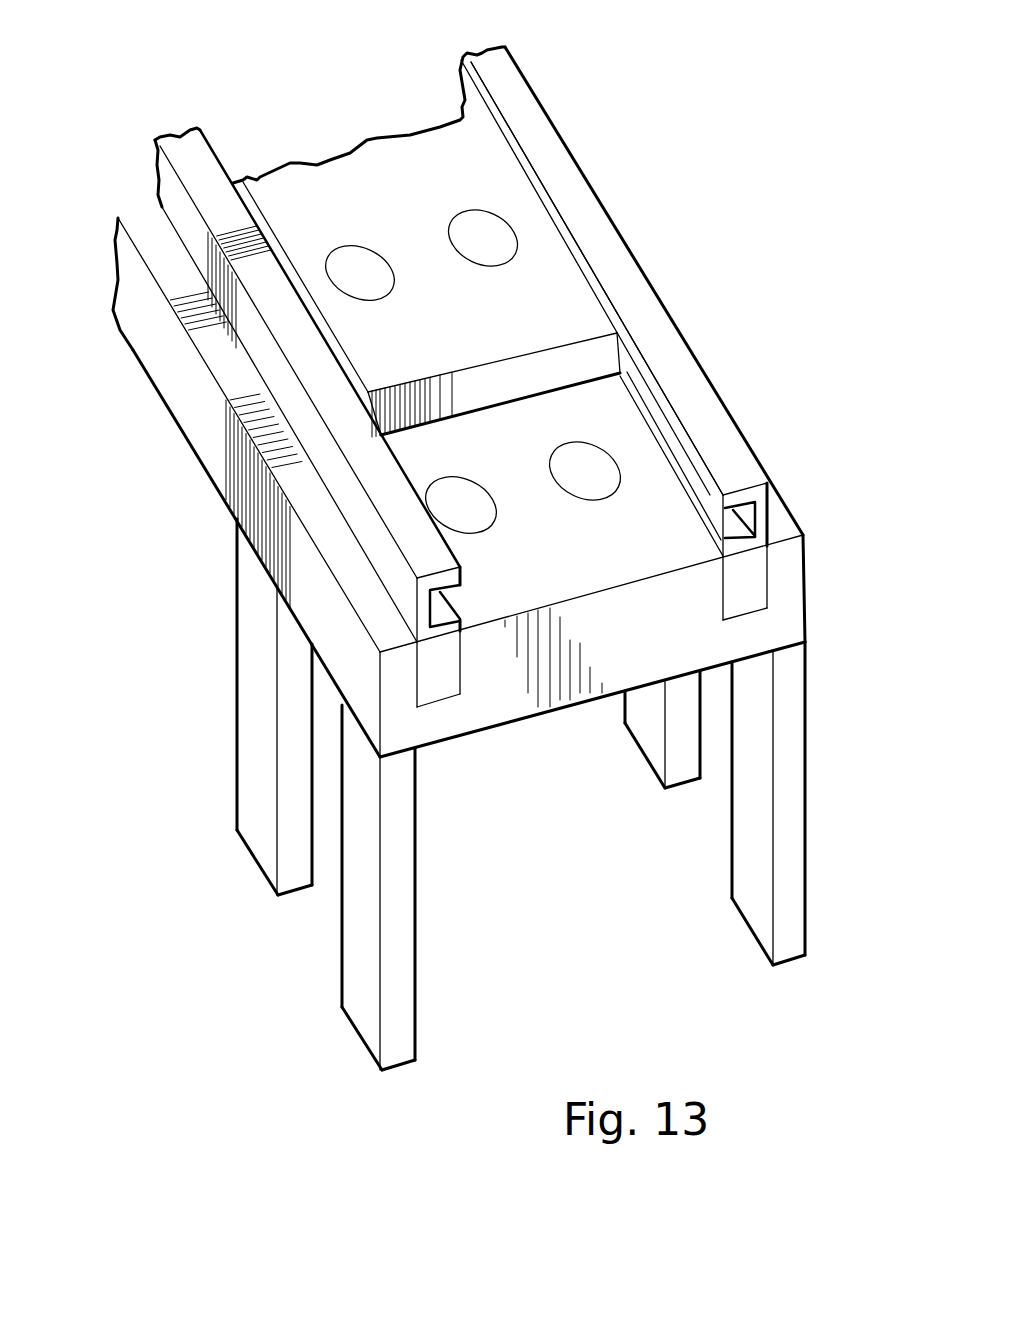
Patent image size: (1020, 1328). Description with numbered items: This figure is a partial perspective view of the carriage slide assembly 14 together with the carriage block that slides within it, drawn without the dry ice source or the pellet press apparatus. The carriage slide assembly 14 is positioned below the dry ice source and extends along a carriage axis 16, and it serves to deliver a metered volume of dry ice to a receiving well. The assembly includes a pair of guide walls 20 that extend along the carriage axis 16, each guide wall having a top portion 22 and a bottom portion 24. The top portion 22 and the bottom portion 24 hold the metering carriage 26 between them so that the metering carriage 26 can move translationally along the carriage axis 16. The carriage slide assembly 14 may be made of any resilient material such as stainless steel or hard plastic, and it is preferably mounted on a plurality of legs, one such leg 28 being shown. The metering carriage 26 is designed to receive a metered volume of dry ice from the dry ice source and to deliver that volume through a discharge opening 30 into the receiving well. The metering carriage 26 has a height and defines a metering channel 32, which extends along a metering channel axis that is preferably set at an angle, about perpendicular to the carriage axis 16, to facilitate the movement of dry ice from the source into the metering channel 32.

The carriage slide assembly 14 is at (630, 214).
The carriage axis 16 is at (306, 116).
The guide walls 20 is at (220, 200).
The top portion 22 is at (290, 333).
The bottom portion 24 is at (647, 477).
The metering carriage 26 is at (482, 153).
The leg 28 is at (413, 998).
The discharge opening 30 is at (443, 514).
The metering channel 32 is at (360, 273).